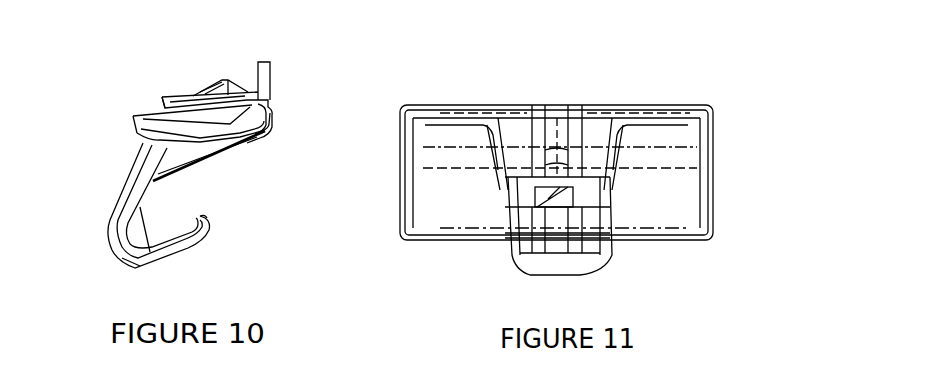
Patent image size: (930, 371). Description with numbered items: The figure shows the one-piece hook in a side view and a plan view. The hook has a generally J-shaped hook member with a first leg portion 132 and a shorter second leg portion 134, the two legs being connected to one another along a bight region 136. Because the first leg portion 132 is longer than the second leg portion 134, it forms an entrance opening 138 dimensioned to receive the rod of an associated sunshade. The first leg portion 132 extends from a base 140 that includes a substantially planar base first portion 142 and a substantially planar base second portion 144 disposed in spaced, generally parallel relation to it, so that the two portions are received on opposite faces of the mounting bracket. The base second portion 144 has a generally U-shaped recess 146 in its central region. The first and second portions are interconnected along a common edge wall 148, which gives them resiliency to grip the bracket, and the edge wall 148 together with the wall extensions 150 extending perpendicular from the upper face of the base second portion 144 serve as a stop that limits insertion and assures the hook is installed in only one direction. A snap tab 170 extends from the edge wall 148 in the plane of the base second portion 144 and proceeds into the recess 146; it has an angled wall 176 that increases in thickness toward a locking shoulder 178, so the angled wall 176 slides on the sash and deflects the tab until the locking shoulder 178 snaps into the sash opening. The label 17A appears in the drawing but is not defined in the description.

In FIG. 10, the first leg portion 132 is at (131, 193).
In FIG. 11, the first leg portion 132 is at (583, 273).
In FIG. 10, the second leg portion 134 is at (210, 227).
In FIG. 10, the bight region 136 is at (150, 253).
In FIG. 10, the entrance opening 138 is at (215, 192).
In FIG. 10, the base 140 is at (270, 147).
In FIG. 11, the base 140 is at (403, 243).
In FIG. 10, the base first portion 142 is at (138, 132).
In FIG. 11, the base first portion 142 is at (697, 192).
In FIG. 10, the base second portion 144 is at (175, 93).
In FIG. 11, the base second portion 144 is at (607, 165).
In FIG. 11, the recess 146 is at (535, 207).
In FIG. 10, the edge wall 148 is at (267, 110).
In FIG. 10, the wall extensions 150 is at (268, 70).
In FIG. 11, the wall extensions 150 is at (480, 103).
In FIG. 10, the snap tab 170 is at (240, 58).
In FIG. 11, the snap tab 170 is at (587, 90).
In FIG. 10, the angled wall 176 is at (212, 78).
In FIG. 10, the locking shoulder 178 is at (212, 80).
In FIG. 10, the wedge line 17A is at (193, 92).